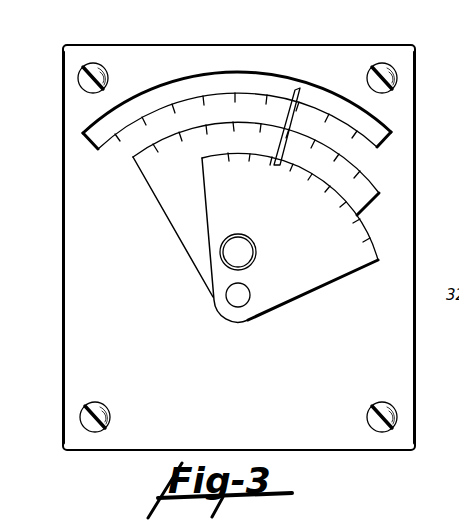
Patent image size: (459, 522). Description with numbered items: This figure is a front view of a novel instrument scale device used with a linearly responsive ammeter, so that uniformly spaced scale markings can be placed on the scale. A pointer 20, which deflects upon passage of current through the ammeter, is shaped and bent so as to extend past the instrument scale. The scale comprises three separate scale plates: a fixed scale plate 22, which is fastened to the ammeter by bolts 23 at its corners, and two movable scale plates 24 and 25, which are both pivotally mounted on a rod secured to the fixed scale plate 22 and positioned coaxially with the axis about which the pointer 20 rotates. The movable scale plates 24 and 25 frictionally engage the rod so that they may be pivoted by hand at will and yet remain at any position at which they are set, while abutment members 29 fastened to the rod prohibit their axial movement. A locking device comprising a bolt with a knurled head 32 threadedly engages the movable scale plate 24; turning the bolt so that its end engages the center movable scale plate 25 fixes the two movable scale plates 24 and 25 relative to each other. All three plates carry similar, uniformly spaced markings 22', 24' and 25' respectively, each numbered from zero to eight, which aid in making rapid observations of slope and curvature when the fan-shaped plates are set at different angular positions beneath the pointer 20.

The pointer 20 is at (301, 85).
The fixed scale plate 22 is at (219, 247).
The markings 22' is at (237, 131).
The bolts 23 is at (78, 80).
The movable scale plate 24 is at (290, 241).
The markings 24' is at (310, 225).
The movable scale plate 25 is at (256, 209).
The markings 25' is at (238, 169).
The abutment members 29 is at (249, 287).
The knurled head 32 is at (250, 234).